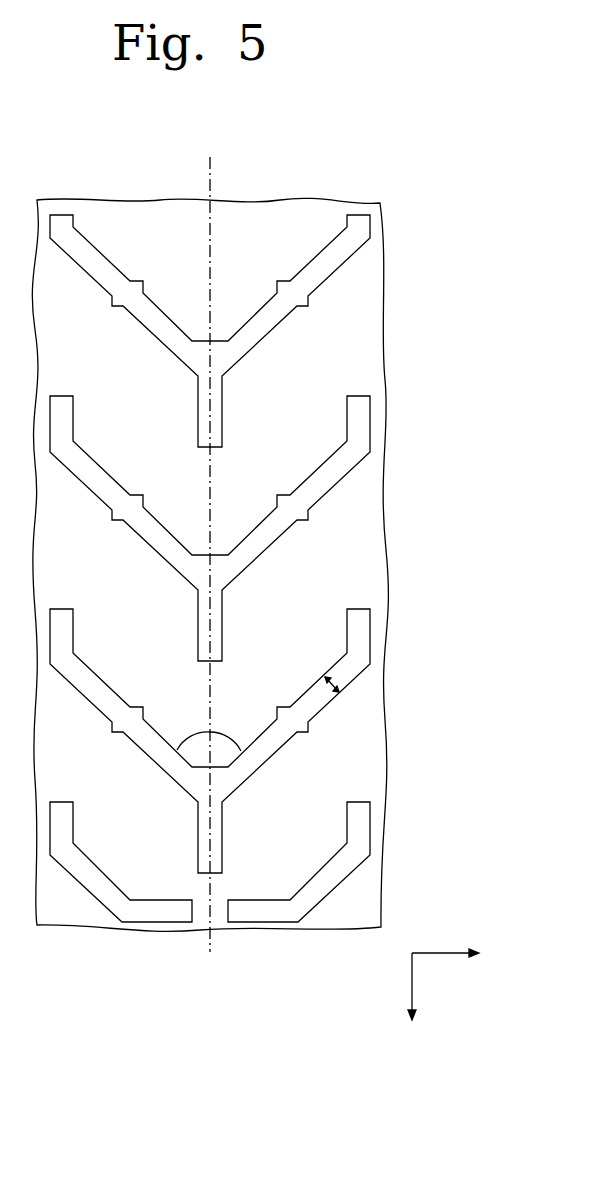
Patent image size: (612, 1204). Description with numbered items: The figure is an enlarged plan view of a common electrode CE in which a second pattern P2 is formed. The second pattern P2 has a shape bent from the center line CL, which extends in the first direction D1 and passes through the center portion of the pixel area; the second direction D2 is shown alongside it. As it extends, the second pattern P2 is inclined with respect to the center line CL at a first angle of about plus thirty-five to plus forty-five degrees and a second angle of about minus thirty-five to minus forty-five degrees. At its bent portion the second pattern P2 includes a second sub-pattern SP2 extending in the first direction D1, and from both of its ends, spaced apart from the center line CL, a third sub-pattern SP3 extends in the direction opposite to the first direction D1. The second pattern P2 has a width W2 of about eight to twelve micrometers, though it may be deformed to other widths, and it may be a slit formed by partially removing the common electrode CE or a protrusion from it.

The common electrode CE is at (378, 190).
The second sub-pattern SP2 is at (217, 397).
The second pattern P2 is at (317, 502).
The third sub-pattern SP3 is at (358, 623).
The width W2 is at (331, 679).
The center line CL is at (208, 567).
The first direction D1 is at (412, 1001).
The second direction D2 is at (461, 957).